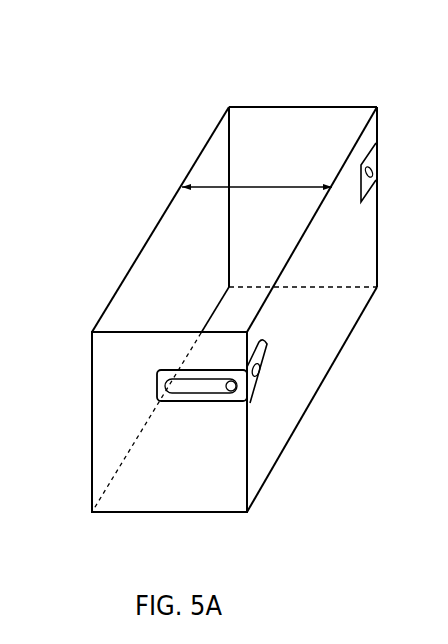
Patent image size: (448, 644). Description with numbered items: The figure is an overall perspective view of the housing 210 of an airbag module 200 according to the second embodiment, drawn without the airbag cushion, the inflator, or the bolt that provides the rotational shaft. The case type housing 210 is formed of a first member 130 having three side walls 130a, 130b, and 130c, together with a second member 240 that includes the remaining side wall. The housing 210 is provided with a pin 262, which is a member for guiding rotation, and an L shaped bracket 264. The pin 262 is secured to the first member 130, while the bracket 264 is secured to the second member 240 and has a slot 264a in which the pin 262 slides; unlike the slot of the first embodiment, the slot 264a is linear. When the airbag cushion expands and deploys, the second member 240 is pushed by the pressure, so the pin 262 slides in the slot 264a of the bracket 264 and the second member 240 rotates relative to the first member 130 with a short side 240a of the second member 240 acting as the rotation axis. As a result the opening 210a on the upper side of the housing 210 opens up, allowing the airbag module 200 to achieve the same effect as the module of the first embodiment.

The airbag module 200 is at (364, 77).
The first member 130 is at (136, 190).
The side wall 130a is at (305, 106).
The side wall 130b is at (147, 237).
The side wall 130c is at (108, 378).
The housing 210 is at (117, 522).
The opening 210a is at (220, 186).
The second member 240 is at (322, 313).
The short side 240a is at (267, 477).
The pin 262 is at (238, 387).
The bracket 264 is at (223, 413).
The slot 264a is at (199, 380).